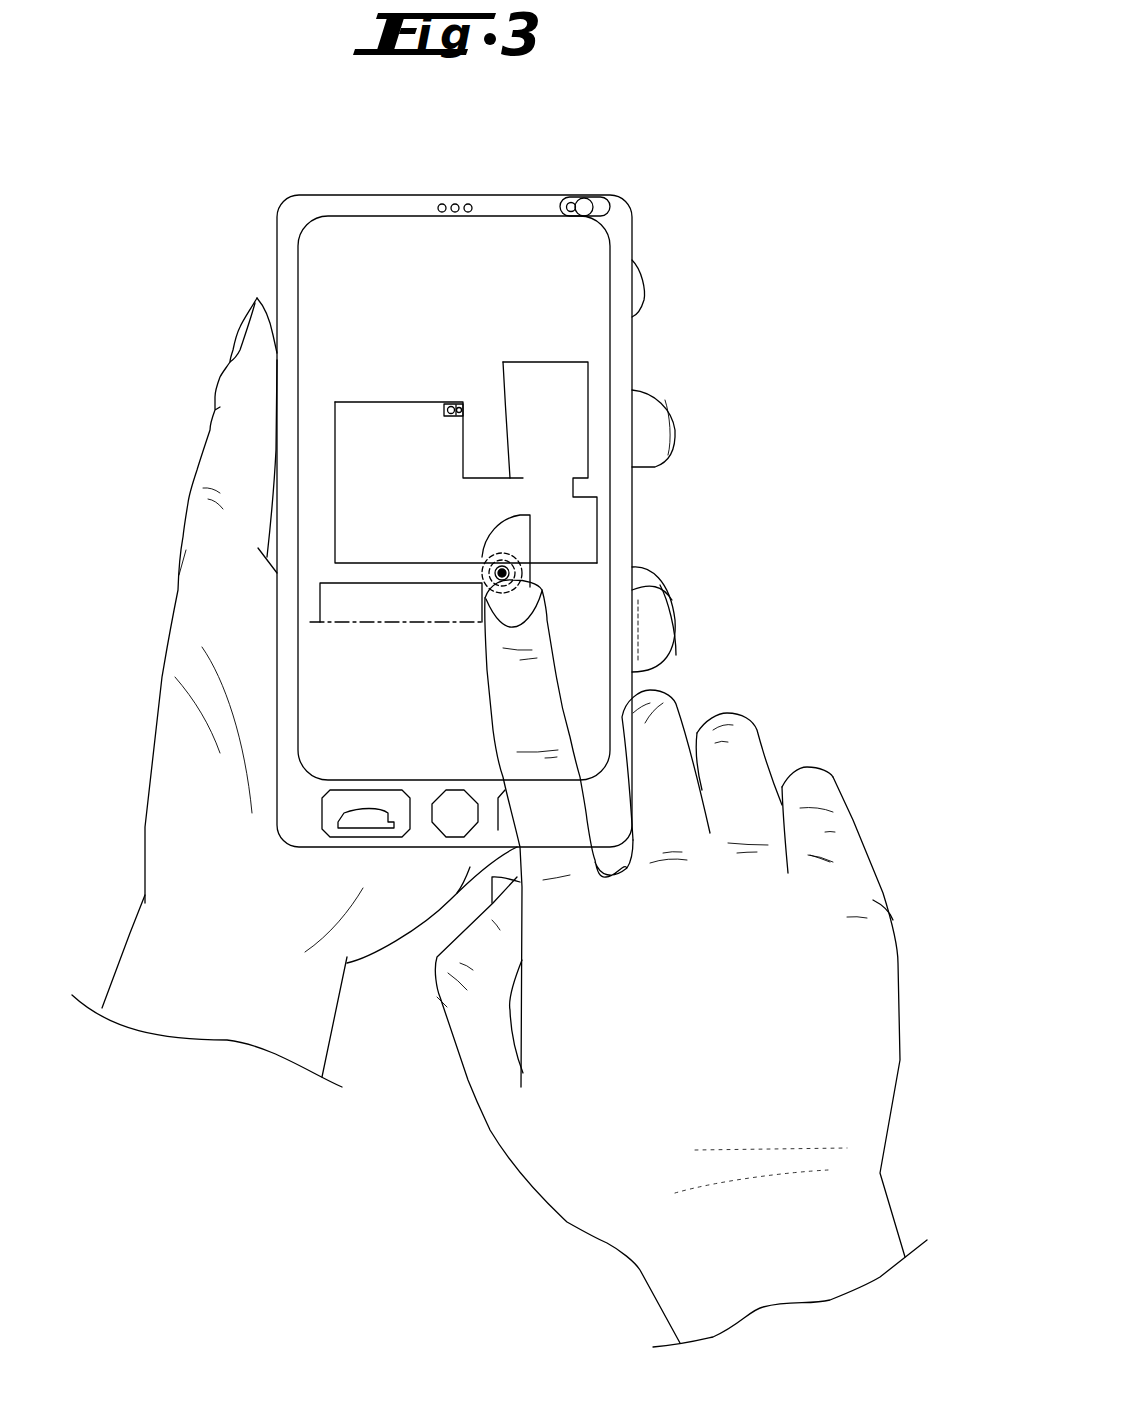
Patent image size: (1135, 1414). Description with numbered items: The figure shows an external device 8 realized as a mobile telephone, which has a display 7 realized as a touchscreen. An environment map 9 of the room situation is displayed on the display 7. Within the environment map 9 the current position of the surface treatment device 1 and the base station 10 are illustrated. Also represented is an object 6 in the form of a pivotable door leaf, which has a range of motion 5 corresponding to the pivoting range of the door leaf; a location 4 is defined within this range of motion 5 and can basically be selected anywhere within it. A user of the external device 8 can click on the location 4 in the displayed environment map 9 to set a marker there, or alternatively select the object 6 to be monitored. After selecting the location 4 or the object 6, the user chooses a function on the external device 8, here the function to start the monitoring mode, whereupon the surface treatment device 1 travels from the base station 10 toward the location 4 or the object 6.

The surface treatment device 1 is at (448, 405).
The location 4 is at (518, 541).
The range of motion 5 is at (553, 518).
The object 6 is at (512, 573).
The display 7 is at (597, 258).
The external device 8 is at (615, 212).
The environment map 9 is at (560, 392).
The base station 10 is at (460, 405).